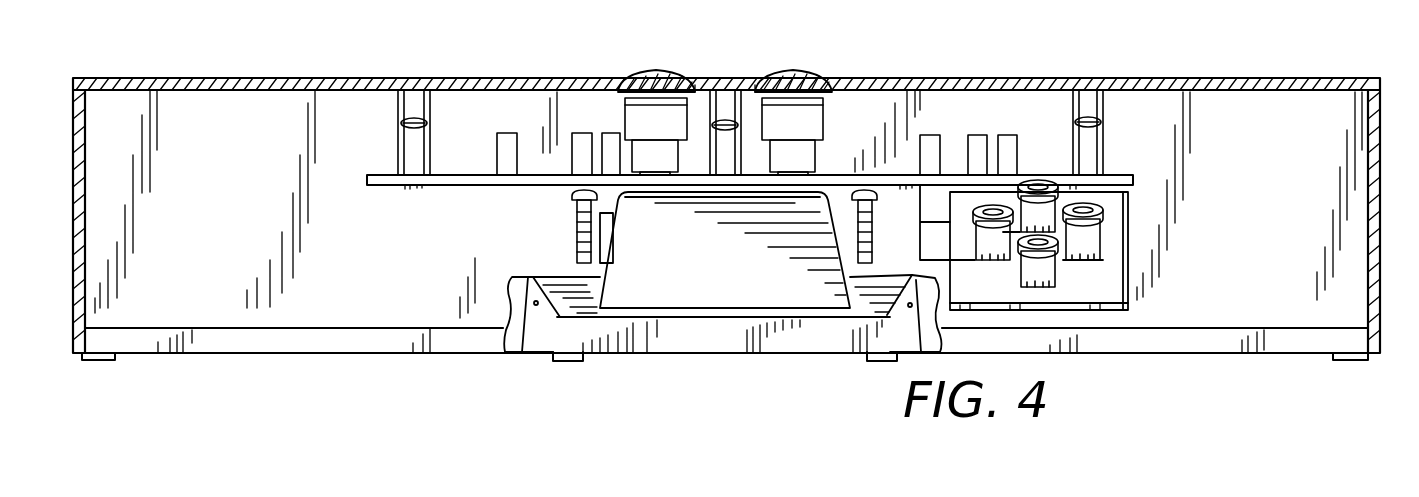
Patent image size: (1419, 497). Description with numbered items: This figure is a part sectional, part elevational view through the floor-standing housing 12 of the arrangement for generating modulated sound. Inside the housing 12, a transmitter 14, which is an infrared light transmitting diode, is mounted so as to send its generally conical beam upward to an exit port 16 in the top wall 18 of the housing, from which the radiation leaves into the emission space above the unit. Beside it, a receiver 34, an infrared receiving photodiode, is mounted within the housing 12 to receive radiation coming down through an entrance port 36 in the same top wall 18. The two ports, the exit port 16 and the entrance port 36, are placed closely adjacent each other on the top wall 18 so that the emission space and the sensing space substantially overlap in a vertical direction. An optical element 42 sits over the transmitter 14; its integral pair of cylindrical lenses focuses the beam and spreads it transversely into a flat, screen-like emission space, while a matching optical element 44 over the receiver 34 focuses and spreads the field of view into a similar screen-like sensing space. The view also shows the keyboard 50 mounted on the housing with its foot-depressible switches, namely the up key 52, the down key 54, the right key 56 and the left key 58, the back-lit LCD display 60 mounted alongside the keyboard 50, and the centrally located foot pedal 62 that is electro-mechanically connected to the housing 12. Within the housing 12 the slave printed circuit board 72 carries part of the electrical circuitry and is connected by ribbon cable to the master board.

The housing 12 is at (1359, 73).
The transmitter 14 is at (637, 118).
The exit port 16 is at (695, 84).
The top wall 18 is at (1000, 77).
The receiver 34 is at (808, 120).
The entrance port 36 is at (754, 78).
The optical element 42 is at (678, 70).
The optical element 44 is at (800, 72).
The keyboard 50 is at (1066, 262).
The up key 52 is at (1042, 180).
The down key 54 is at (1050, 272).
The right key 56 is at (1095, 210).
The left key 58 is at (975, 215).
The display 60 is at (573, 230).
The foot pedal 62 is at (708, 287).
The slave printed circuit board 72 is at (472, 187).